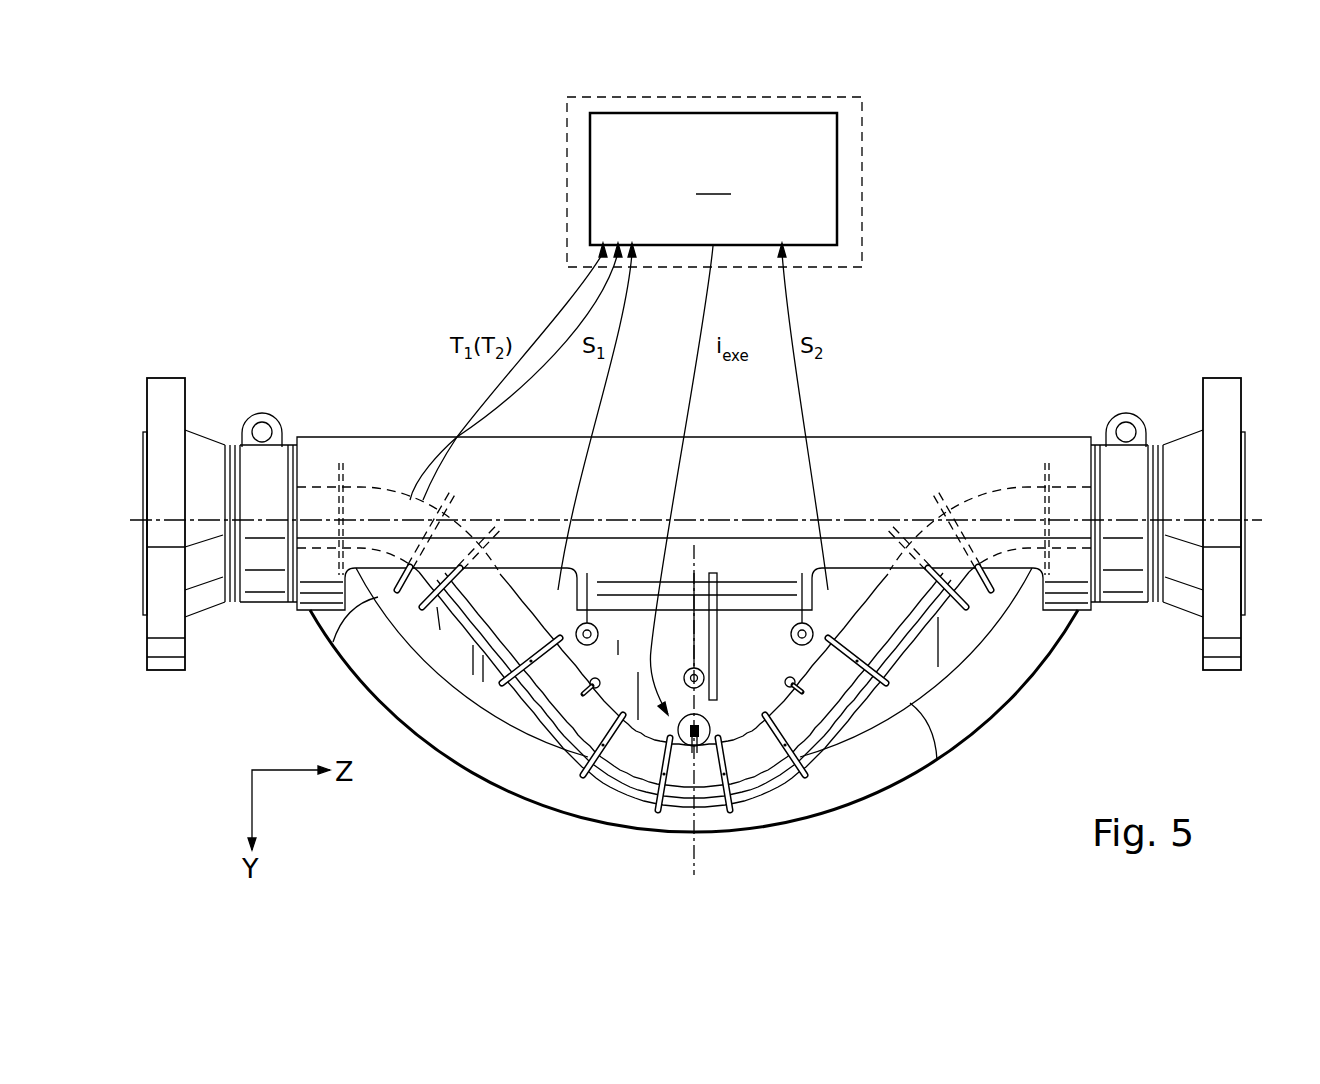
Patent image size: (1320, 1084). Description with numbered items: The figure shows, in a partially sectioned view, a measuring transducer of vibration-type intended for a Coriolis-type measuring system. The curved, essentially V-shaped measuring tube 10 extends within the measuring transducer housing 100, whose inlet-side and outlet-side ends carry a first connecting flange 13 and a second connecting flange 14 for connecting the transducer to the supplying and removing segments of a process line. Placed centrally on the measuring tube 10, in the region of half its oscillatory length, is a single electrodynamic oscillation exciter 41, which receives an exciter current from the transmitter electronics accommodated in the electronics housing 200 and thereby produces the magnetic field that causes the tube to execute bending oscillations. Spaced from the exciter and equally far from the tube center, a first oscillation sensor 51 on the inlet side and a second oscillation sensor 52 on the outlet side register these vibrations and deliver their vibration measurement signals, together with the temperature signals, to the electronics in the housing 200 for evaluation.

The measuring tube 10 is at (635, 760).
The first connecting flange 13 is at (168, 397).
The second connecting flange 14 is at (1223, 393).
The electrodynamic oscillation exciter 41 is at (760, 763).
The first oscillation sensor 51 is at (572, 697).
The second oscillation sensor 52 is at (814, 688).
The measuring transducer housing 100 is at (398, 457).
The electronics housing 200 is at (845, 176).